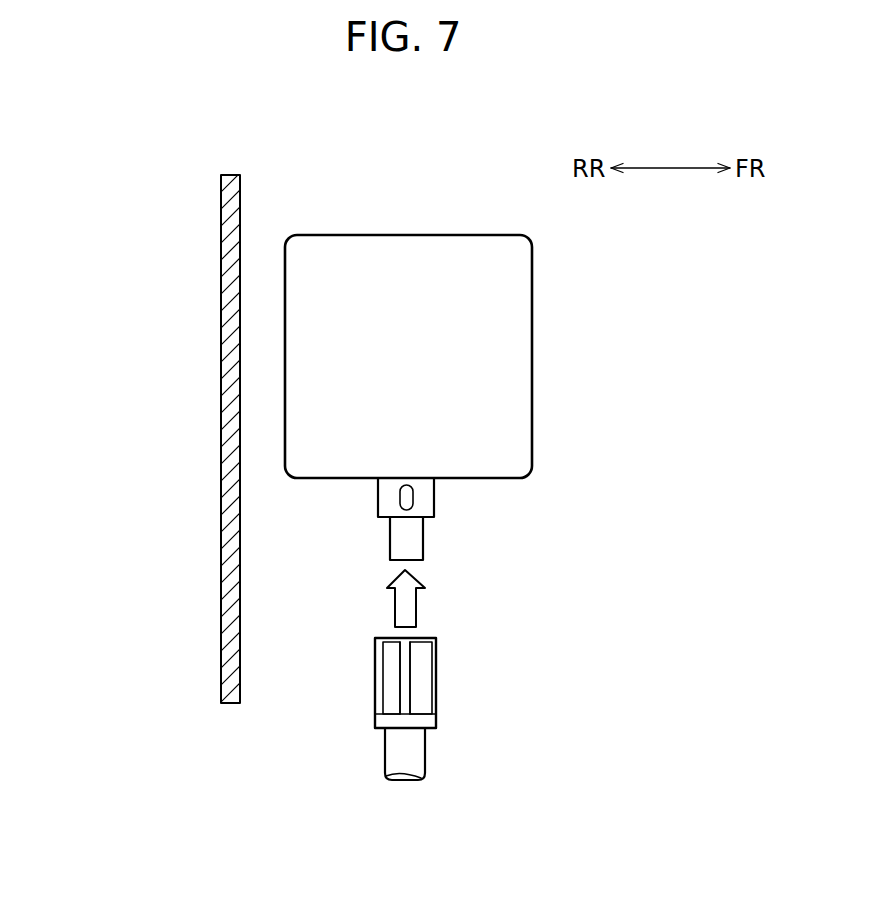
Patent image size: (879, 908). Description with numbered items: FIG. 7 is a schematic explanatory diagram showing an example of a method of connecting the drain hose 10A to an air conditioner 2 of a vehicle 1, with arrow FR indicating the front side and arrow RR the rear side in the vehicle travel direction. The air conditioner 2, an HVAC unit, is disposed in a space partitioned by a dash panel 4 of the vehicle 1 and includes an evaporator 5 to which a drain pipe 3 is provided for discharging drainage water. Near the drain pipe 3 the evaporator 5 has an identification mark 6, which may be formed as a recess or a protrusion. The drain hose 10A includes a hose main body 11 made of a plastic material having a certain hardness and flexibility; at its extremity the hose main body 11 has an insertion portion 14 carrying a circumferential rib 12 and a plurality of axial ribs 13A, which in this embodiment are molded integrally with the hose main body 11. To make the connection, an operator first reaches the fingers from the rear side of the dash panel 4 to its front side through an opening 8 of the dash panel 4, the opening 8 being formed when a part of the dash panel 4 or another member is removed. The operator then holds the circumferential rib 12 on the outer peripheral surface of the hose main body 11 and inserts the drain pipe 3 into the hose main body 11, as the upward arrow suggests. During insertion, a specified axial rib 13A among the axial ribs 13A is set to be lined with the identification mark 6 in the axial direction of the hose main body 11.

The vehicle 1 is at (157, 308).
The air conditioner 2 is at (577, 285).
The drain pipe 3 is at (423, 540).
The dash panel 4 is at (221, 425).
The evaporator 5 is at (533, 380).
The identification mark 6 is at (413, 497).
The opening 8 is at (238, 765).
The drain hose 10A is at (408, 800).
The hose main body 11 is at (433, 745).
The circumferential rib 12 is at (395, 722).
The axial rib 13A is at (404, 677).
The insertion portion 14 is at (377, 693).